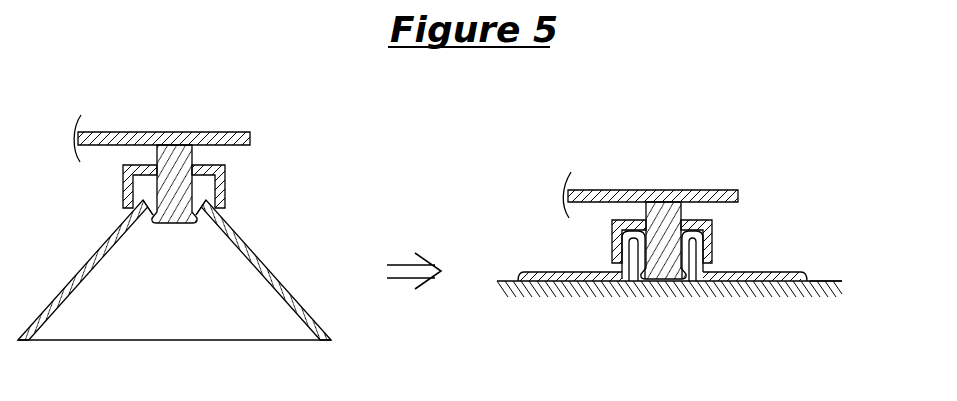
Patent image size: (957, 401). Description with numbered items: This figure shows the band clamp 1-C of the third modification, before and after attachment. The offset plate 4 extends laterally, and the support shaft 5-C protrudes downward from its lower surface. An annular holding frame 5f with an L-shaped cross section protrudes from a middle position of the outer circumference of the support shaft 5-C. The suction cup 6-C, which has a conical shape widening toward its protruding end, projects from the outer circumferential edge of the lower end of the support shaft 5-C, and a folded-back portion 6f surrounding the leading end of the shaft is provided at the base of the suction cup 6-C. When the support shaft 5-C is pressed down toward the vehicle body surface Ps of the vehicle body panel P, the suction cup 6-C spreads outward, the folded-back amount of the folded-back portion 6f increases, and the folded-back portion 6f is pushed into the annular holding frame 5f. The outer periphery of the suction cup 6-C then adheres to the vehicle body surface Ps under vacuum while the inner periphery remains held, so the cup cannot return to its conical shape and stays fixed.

The band clamp 1-C is at (286, 87).
The offset plate 4 is at (118, 132).
The support shaft 5-C is at (193, 154).
The annular holding frame 5f is at (123, 182).
The suction cup 6-C is at (263, 262).
The folded-back portion 6f is at (143, 213).
The vehicle body panel P is at (742, 288).
The vehicle body surface Ps is at (828, 280).